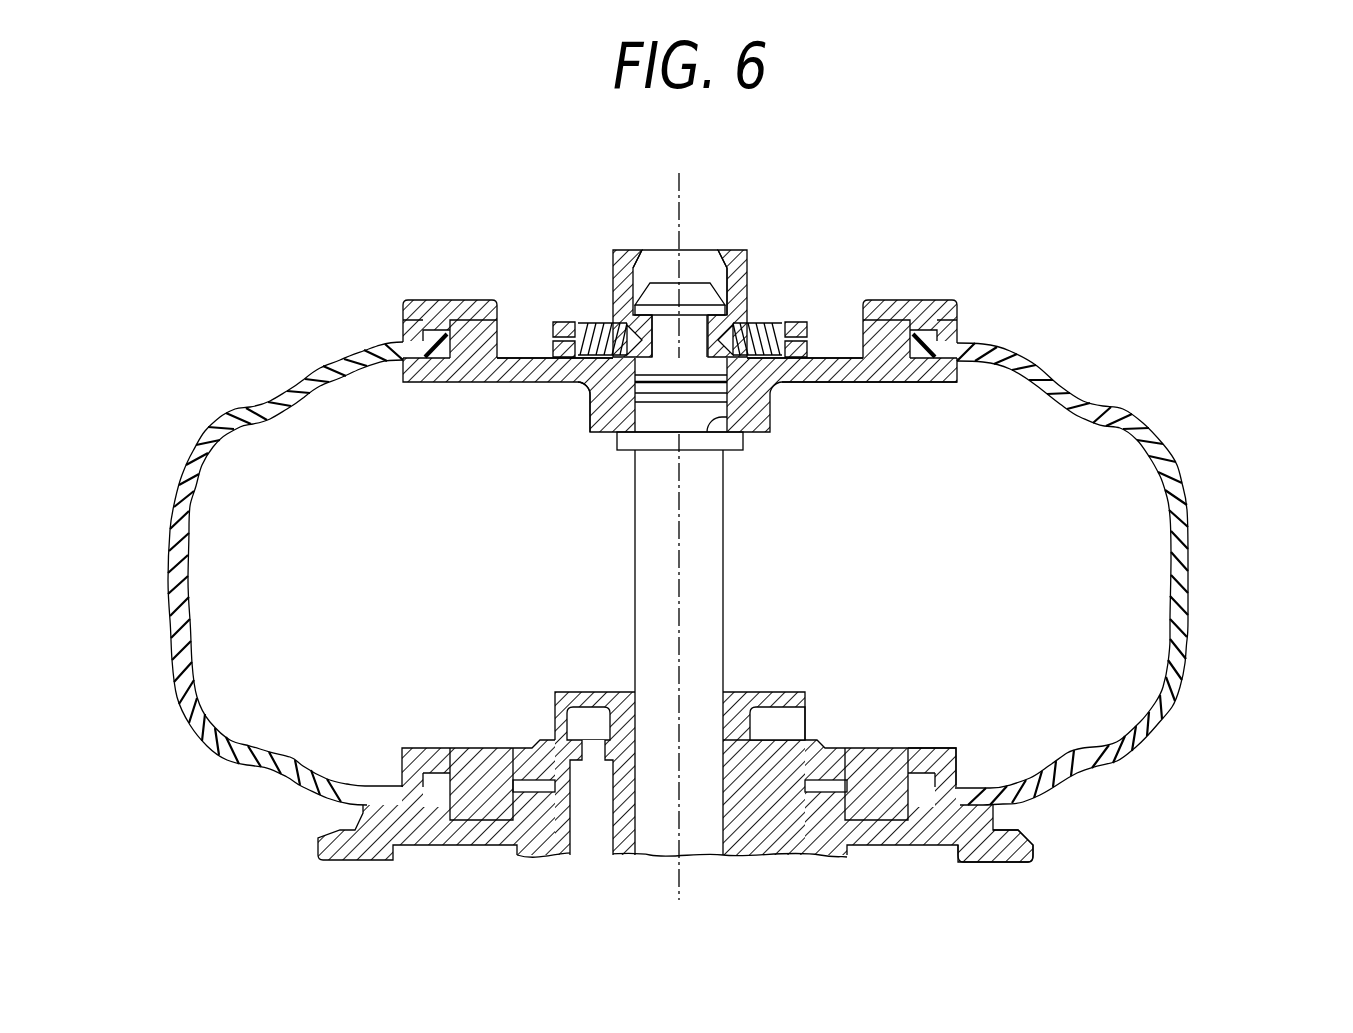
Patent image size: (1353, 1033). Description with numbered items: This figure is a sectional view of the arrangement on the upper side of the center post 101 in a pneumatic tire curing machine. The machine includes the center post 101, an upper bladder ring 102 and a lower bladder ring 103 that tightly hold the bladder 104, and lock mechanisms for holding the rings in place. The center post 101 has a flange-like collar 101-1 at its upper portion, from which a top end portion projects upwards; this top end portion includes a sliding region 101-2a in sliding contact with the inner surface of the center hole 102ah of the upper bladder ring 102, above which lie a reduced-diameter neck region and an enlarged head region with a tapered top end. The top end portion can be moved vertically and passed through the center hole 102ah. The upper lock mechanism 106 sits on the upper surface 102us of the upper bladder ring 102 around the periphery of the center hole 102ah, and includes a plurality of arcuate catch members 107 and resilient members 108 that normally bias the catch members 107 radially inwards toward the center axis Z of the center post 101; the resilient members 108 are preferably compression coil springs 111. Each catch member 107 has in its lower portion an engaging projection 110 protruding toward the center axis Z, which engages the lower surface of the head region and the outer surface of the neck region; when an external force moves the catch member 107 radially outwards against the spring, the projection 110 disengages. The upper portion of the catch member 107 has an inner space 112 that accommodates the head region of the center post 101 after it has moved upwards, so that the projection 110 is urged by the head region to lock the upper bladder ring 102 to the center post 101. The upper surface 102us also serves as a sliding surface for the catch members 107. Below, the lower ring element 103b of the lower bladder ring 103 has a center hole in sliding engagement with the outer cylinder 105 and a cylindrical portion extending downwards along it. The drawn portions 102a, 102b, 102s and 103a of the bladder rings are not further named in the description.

The center axis Z is at (680, 193).
The center post 101 is at (723, 597).
The flange-like collar 101-1 is at (627, 443).
The sliding region 101-2a is at (588, 388).
The upper bladder ring 102 is at (907, 302).
The plate portion 102a is at (827, 378).
The center hole 102ah is at (718, 443).
The clamp ring 102b is at (957, 320).
The spring seat 102s is at (575, 351).
The upper surface 102us is at (822, 357).
The lower bladder ring 103 is at (877, 748).
The clamp portion 103a is at (917, 756).
The lower ring element 103b is at (1028, 843).
The bladder 104 is at (1192, 540).
The outer cylinder 105 is at (783, 750).
The upper lock mechanism 106 is at (742, 250).
The catch member 107 is at (742, 280).
The resilient member 108 is at (808, 318).
The engaging projection 110 is at (707, 332).
The compression coil spring 111 is at (594, 323).
The inner space 112 is at (697, 262).